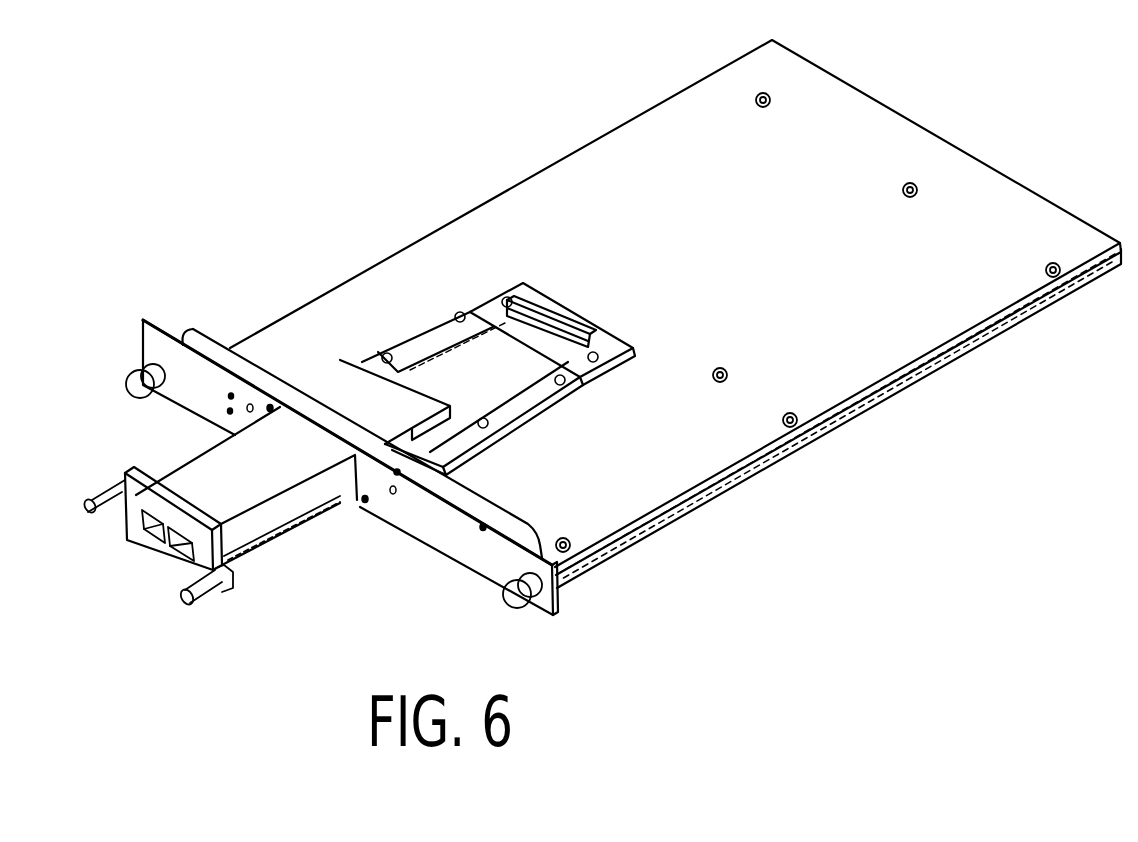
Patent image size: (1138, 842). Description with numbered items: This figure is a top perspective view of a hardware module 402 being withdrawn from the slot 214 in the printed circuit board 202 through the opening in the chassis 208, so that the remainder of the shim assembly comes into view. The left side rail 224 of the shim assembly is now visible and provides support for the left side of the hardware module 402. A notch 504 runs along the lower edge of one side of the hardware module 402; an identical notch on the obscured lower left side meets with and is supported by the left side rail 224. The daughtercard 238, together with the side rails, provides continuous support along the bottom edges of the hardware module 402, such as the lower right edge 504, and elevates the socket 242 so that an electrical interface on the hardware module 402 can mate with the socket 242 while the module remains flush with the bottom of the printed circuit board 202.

The printed circuit board 202 is at (906, 142).
The chassis 208 is at (441, 540).
The slot 214 is at (500, 372).
The left side rail 224 is at (430, 348).
The daughtercard 238 is at (602, 337).
The socket 242 is at (543, 312).
The hardware module 402 is at (198, 463).
The notch 504 is at (287, 533).